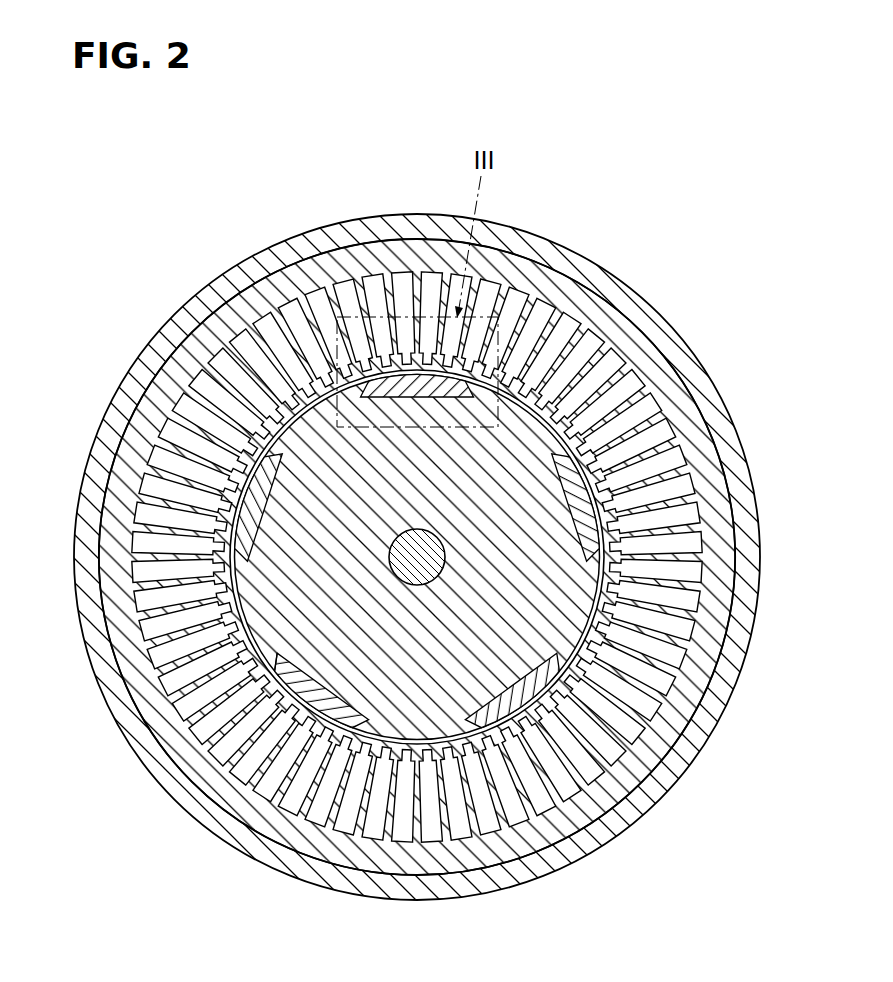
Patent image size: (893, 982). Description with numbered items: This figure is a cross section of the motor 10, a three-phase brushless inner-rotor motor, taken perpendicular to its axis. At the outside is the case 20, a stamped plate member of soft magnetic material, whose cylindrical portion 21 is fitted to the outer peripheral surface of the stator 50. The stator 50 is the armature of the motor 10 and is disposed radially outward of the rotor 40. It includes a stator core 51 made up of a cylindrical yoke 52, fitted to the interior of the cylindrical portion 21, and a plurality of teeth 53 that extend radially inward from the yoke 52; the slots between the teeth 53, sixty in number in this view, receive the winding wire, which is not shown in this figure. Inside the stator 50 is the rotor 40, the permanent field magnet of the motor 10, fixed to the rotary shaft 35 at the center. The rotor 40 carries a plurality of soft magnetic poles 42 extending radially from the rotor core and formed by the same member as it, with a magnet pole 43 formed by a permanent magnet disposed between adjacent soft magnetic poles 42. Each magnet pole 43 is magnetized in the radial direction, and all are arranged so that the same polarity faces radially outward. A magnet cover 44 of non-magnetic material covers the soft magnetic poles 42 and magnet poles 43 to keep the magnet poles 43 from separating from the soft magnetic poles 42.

The motor 10 is at (418, 557).
The case 20 is at (418, 557).
The cylindrical portion 21 is at (668, 335).
The rotary shaft 35 is at (437, 575).
The rotor 40 is at (407, 568).
The soft magnetic pole 42 is at (243, 327).
The magnet pole 43 is at (405, 355).
The magnet cover 44 is at (243, 680).
The stator 50 is at (384, 557).
The stator core 51 is at (385, 557).
The yoke 52 is at (163, 393).
The teeth 53 is at (334, 298).